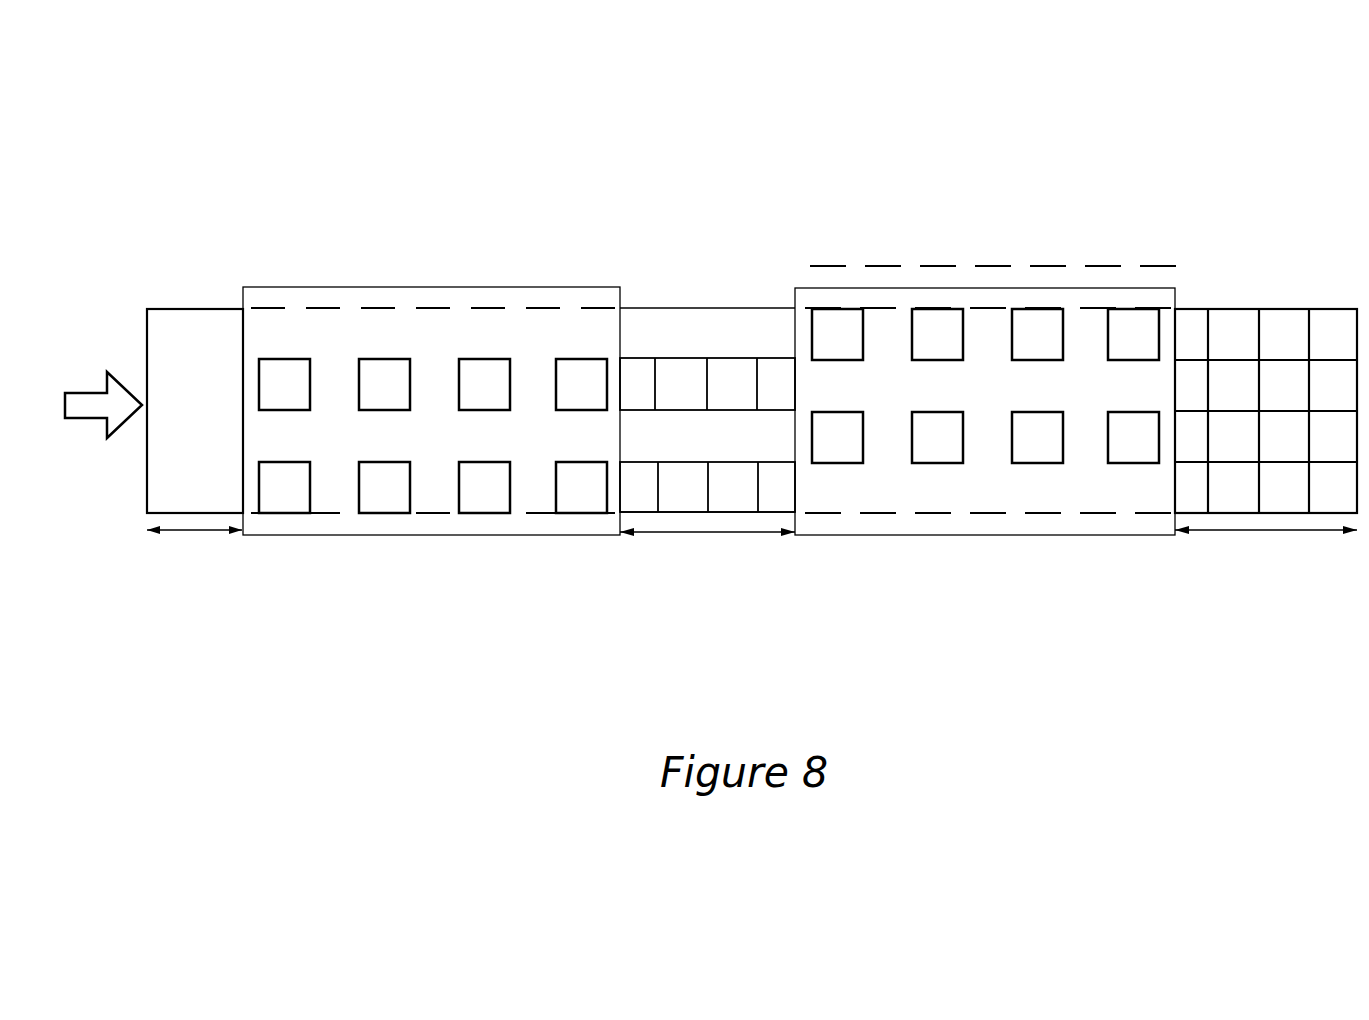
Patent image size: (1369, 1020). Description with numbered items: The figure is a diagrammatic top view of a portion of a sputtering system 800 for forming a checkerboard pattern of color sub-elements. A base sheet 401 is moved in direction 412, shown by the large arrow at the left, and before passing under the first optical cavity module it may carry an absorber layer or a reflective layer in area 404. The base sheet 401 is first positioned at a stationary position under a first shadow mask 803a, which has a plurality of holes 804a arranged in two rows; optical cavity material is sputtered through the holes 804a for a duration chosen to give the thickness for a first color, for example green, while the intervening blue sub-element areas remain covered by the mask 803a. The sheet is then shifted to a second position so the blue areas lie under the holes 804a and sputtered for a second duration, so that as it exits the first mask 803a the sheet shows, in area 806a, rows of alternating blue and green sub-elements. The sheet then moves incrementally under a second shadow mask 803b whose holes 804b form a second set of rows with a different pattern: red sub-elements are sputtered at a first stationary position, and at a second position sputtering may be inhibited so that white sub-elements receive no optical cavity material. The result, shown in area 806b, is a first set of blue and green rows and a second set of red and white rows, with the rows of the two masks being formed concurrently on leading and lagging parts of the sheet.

The sputtering system 800 is at (770, 151).
The direction 412 is at (117, 417).
The base sheet 401 is at (165, 482).
The area 404 is at (194, 541).
The first shadow mask 803a is at (590, 535).
The holes 804a is at (283, 372).
The area 806a is at (707, 431).
The second shadow mask 803b is at (958, 535).
The holes 804b is at (838, 330).
The area 806b is at (1266, 432).